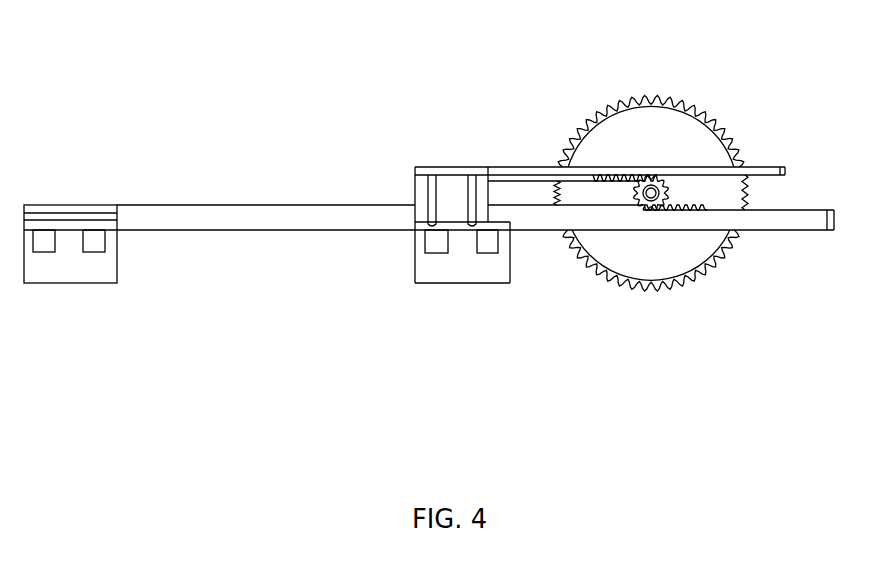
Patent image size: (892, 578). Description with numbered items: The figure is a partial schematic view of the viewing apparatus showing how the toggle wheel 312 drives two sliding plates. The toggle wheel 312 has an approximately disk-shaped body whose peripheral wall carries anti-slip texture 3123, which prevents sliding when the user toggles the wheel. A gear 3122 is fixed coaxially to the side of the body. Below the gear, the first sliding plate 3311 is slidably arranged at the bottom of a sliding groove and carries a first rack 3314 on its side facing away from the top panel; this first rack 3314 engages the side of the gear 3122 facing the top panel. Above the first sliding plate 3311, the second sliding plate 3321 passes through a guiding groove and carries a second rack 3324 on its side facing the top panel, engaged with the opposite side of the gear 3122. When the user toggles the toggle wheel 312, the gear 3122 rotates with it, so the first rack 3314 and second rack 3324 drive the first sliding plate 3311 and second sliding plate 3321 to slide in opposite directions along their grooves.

The toggle wheel 312 is at (673, 128).
The anti-slip texture 3123 is at (650, 97).
The gear 3122 is at (666, 200).
The second sliding plate 3321 is at (770, 166).
The second rack 3324 is at (611, 172).
The first sliding plate 3311 is at (820, 232).
The first rack 3314 is at (662, 213).